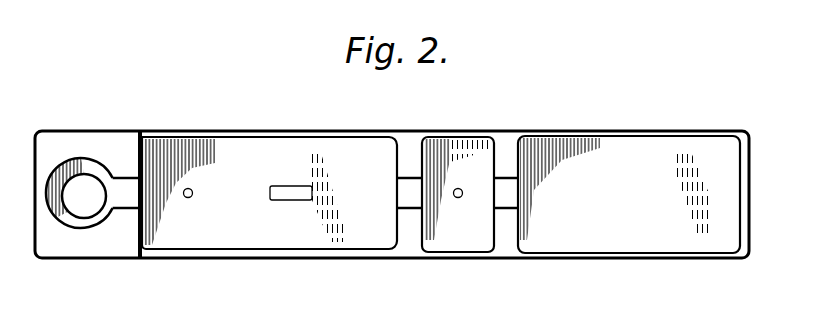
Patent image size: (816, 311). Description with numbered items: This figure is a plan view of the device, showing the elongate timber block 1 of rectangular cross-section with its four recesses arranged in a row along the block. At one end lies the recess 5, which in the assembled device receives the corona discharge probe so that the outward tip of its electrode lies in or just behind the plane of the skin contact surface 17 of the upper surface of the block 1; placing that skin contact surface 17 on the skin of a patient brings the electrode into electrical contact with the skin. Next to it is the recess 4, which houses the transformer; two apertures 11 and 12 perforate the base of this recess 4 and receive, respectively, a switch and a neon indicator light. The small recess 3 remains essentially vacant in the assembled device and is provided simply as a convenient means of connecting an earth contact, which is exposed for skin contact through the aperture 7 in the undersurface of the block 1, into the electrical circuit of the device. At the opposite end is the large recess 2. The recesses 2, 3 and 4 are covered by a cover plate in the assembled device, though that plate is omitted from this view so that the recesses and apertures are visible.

The timber block 1 is at (71, 122).
The recess 2 is at (632, 205).
The recess 3 is at (470, 237).
The recess 4 is at (286, 166).
The recess 5 is at (92, 202).
The aperture 7 is at (461, 189).
The aperture 11 is at (288, 200).
The aperture 12 is at (193, 193).
The skin contact surface 17 is at (116, 232).